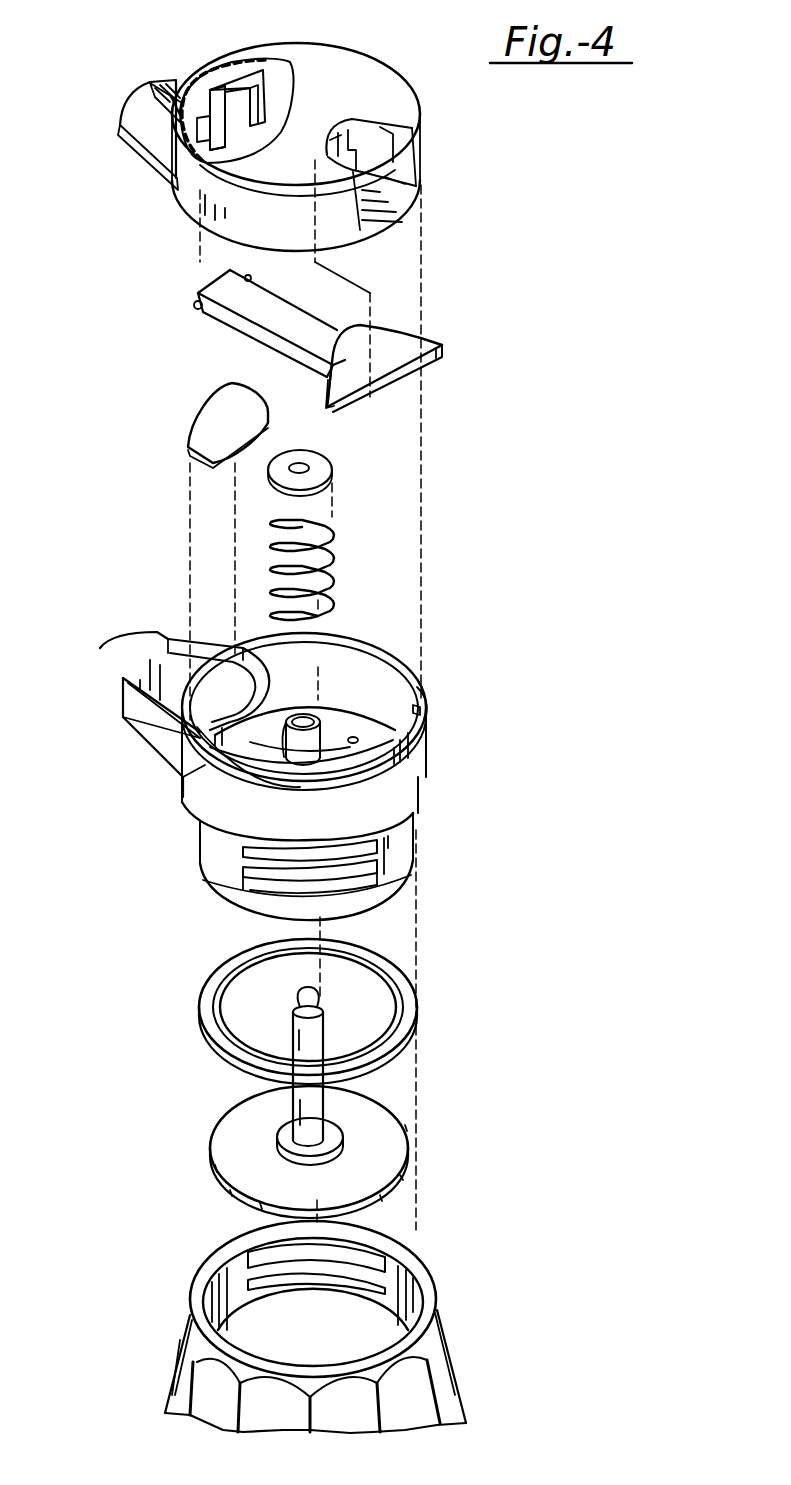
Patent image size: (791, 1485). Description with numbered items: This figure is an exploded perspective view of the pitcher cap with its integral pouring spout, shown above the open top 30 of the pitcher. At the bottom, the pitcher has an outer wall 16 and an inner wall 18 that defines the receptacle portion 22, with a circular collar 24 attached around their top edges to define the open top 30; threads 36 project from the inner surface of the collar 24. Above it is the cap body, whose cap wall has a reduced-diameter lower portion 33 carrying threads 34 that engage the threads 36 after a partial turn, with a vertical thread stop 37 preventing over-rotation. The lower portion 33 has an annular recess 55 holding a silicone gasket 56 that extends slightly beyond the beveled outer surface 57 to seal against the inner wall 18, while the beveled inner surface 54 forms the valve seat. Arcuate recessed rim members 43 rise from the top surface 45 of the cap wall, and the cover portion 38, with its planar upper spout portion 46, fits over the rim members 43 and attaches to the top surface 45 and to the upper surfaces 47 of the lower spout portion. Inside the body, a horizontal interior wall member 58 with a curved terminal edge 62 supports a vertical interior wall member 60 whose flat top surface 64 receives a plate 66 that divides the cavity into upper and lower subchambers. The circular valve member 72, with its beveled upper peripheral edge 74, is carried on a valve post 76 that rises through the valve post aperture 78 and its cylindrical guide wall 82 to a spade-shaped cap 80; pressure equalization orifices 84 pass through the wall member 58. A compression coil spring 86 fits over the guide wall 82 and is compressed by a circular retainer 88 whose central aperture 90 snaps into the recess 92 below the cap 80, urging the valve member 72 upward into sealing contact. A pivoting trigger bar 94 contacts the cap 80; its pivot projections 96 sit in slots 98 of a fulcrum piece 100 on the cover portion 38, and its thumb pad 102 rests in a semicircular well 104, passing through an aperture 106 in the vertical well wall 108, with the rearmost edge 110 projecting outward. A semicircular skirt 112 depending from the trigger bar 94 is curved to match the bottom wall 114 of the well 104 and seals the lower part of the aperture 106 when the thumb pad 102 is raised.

The outer wall 16 is at (440, 1390).
The inner wall 18 is at (304, 1337).
The receptacle portion 22 is at (250, 1323).
The circular collar 24 is at (212, 1347).
The open top 30 is at (220, 1247).
The lower portion of the cap wall 33 is at (417, 817).
The threads 34 is at (387, 838).
The threads 36 is at (397, 1290).
The vertical thread stop 37 is at (413, 892).
The cover portion 38 is at (327, 70).
The recessed rim members 43 is at (417, 687).
The top surface of the cap wall 45 is at (427, 728).
The upper spout portion 46 is at (135, 120).
The upper surfaces of the lower spout portion 47 is at (105, 648).
The inner surface of the lower edge 54 is at (228, 893).
The annular recess 55 is at (280, 900).
The silicone gasket 56 is at (397, 958).
The beveled outer surface 57 is at (360, 902).
The horizontal interior wall member 58 is at (341, 721).
The vertical interior wall member 60 is at (285, 662).
The curved terminal edge 62 is at (285, 725).
The top surface of the vertical interior wall member 64 is at (210, 650).
The plate 66 is at (192, 413).
The circular valve member 72 is at (377, 1123).
The beveled upper peripheral edge 74 is at (407, 1153).
The valve post 76 is at (297, 1103).
The valve post aperture 78 is at (307, 718).
The spade-shaped cap 80 is at (297, 997).
The cylindrical guide wall 82 is at (293, 748).
The pressure equalization orifices 84 is at (357, 737).
The compression coil spring 86 is at (337, 593).
The circular retainer 88 is at (337, 473).
The central aperture 90 is at (298, 462).
The recess 92 is at (322, 1010).
The pivoting trigger bar 94 is at (247, 328).
The pivot projections 96 is at (192, 312).
The slots 98 is at (158, 98).
The fulcrum piece 100 is at (192, 77).
The thumb pad 102 is at (403, 347).
The semicircular well 104 is at (380, 117).
The aperture 106 is at (343, 133).
The vertical well wall 108 is at (393, 133).
The rearmost edge 110 is at (435, 367).
The semicircular skirt 112 is at (327, 413).
The bottom wall 114 is at (418, 187).